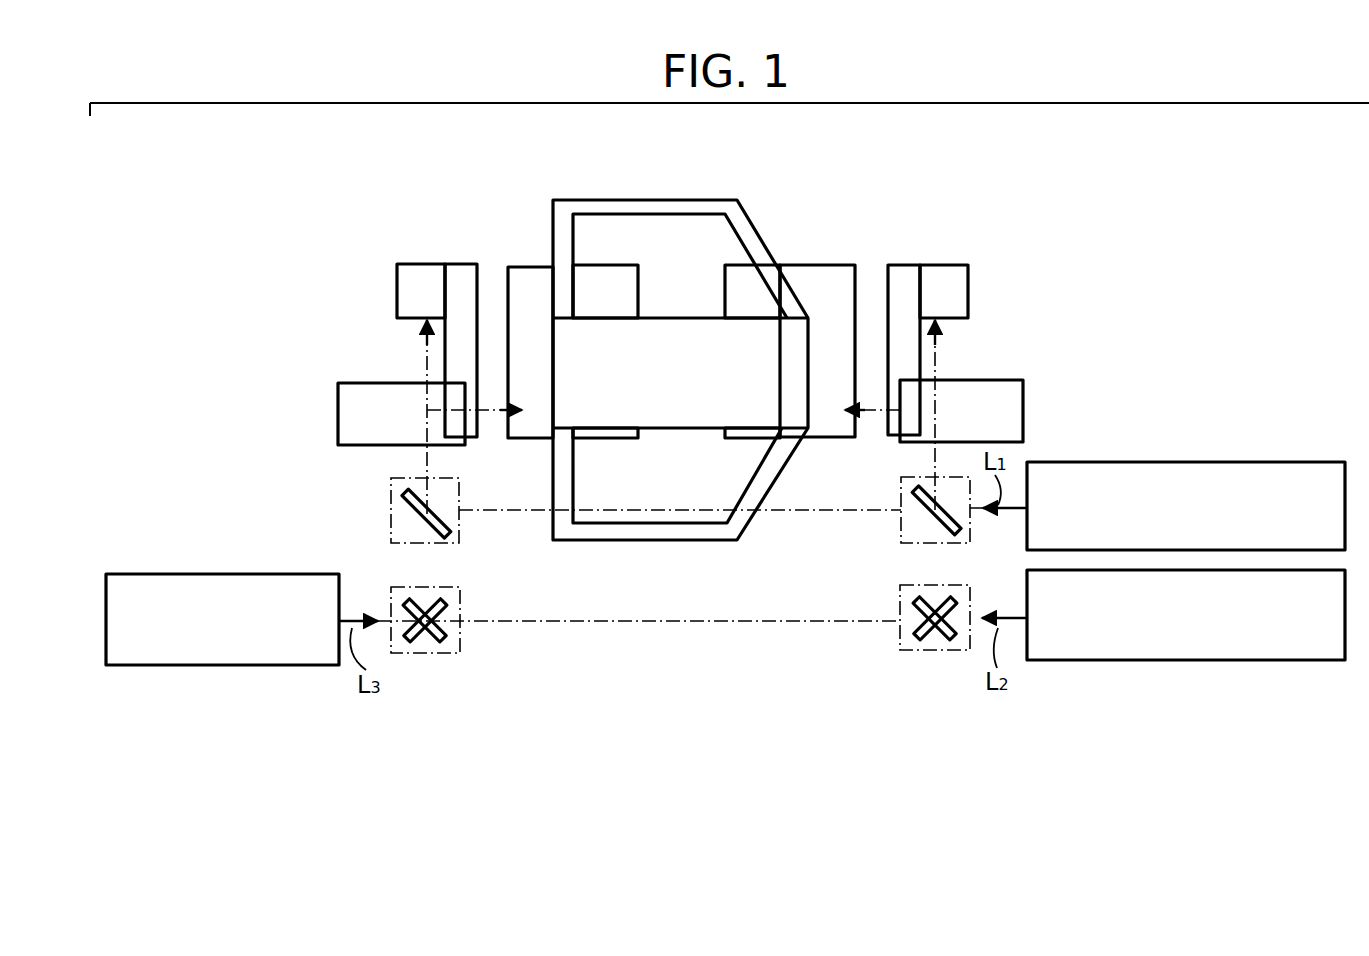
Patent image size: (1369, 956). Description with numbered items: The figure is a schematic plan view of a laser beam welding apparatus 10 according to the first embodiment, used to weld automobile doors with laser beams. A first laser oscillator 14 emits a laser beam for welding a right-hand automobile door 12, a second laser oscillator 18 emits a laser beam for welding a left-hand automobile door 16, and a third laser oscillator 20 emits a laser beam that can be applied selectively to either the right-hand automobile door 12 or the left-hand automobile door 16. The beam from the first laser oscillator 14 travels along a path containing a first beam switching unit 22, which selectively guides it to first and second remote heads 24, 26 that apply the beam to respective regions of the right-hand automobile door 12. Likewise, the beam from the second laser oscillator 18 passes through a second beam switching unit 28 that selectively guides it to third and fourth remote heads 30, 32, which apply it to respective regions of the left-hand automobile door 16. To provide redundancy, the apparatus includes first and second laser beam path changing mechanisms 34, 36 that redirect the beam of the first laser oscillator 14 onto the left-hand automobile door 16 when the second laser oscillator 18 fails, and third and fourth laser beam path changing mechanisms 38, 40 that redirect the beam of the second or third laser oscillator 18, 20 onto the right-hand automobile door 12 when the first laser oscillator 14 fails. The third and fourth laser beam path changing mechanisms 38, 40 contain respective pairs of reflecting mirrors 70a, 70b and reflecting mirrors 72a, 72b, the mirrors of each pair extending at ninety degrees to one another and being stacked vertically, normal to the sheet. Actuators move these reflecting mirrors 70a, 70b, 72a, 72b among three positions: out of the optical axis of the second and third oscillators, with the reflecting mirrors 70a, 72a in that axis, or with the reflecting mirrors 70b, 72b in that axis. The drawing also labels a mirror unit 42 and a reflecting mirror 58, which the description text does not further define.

The laser beam welding apparatus 10 is at (984, 163).
The right-hand automobile door 12 is at (680, 543).
The first laser oscillator 14 is at (1155, 480).
The left-hand automobile door 16 is at (656, 203).
The second laser oscillator 18 is at (1130, 648).
The third laser oscillator 20 is at (192, 663).
The first beam switching unit 22 is at (995, 395).
The first remote head 24 is at (910, 270).
The second remote head 26 is at (822, 276).
The second beam switching unit 28 is at (355, 392).
The third remote head 30 is at (456, 274).
The fourth remote head 32 is at (522, 276).
The first laser beam path changing mechanism 34 is at (892, 522).
The second laser beam path changing mechanism 36 is at (420, 519).
The third laser beam path changing mechanism 38 is at (886, 642).
The fourth laser beam path changing mechanism 40 is at (468, 642).
The reflecting mirror unit 42 is at (916, 488).
The reflecting mirror 58 is at (447, 527).
The reflecting mirror 70a is at (950, 600).
The reflecting mirror 70b is at (938, 648).
The reflecting mirror 72a is at (443, 600).
The reflecting mirror 72b is at (436, 645).